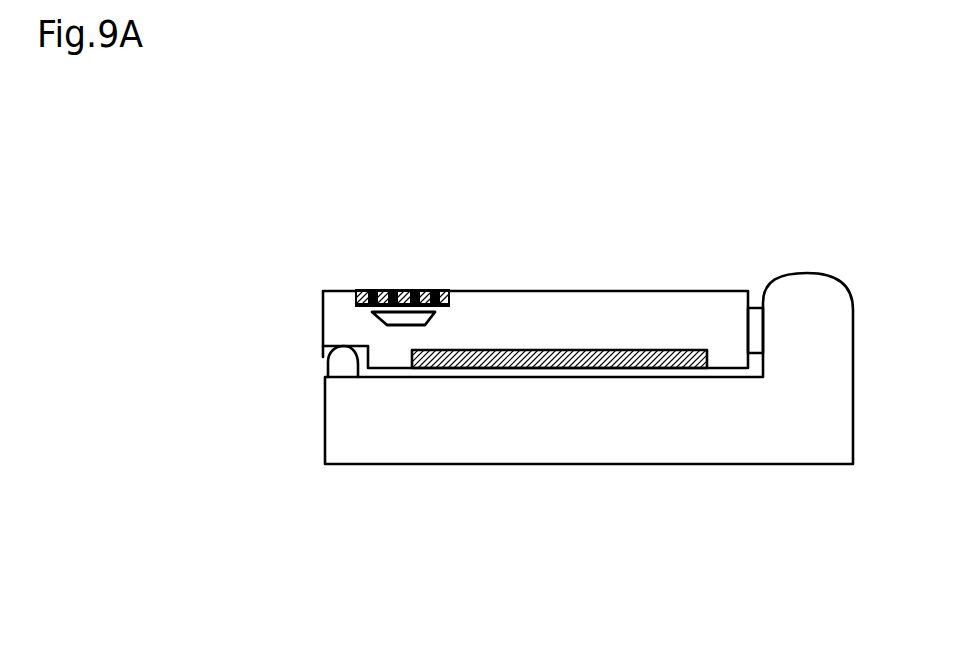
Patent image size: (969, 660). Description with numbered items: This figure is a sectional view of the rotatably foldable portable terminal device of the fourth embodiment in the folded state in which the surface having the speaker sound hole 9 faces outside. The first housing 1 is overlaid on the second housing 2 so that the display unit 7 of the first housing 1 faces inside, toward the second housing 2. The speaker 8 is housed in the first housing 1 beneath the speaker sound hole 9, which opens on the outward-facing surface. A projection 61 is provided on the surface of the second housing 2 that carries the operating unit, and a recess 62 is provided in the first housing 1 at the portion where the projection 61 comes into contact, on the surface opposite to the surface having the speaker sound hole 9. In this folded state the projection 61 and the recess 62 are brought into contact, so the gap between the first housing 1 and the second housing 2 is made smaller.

The first housing 1 is at (353, 317).
The second housing 2 is at (387, 450).
The display unit 7 is at (652, 350).
The speaker 8 is at (435, 312).
The speaker sound hole 9 is at (403, 290).
The projection 61 is at (335, 360).
The recess 62 is at (322, 357).